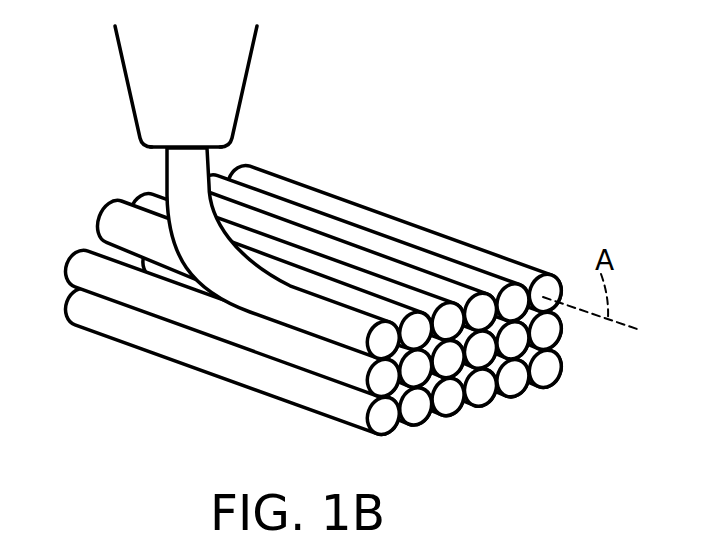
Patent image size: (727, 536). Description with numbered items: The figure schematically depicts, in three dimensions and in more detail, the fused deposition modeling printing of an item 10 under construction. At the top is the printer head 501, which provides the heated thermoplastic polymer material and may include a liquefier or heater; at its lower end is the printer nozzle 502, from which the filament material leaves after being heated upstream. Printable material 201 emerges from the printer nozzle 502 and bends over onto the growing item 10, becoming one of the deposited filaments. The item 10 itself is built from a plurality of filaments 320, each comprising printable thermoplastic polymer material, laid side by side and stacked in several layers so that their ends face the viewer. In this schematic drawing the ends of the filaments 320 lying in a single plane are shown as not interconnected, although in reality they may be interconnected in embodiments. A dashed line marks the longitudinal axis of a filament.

The 3D item 10 is at (316, 299).
The printable material 201 is at (188, 161).
The filament 320 is at (165, 342).
The printer head 501 is at (129, 85).
The printer nozzle 502 is at (150, 148).